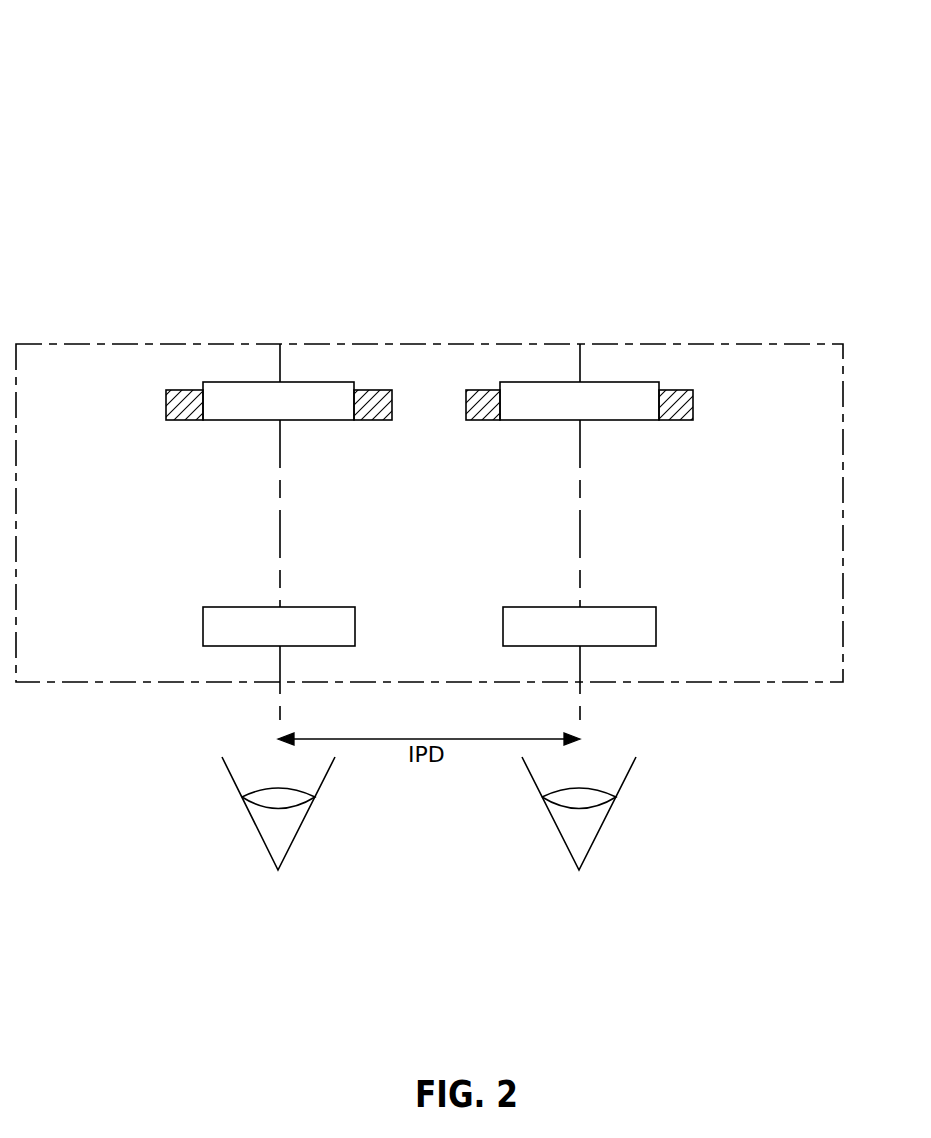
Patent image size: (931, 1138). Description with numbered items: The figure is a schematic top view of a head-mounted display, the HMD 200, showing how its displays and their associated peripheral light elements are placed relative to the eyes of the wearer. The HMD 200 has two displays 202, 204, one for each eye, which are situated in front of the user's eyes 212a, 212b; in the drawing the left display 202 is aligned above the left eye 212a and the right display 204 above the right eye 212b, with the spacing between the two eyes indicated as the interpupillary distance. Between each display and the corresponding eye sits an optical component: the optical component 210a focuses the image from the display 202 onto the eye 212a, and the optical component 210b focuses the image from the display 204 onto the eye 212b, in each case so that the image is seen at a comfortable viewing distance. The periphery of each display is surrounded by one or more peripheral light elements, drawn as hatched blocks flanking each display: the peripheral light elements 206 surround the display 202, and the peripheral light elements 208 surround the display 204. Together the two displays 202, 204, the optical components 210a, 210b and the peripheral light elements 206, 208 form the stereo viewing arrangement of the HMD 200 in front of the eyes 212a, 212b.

The HMD 200 is at (224, 98).
The display 202 is at (278, 401).
The display 204 is at (579, 401).
The peripheral light elements 206 is at (165, 407).
The peripheral light elements 208 is at (694, 405).
The optical component 210a is at (279, 626).
The optical component 210b is at (579, 626).
The user's eye 212a is at (260, 840).
The user's eye 212b is at (616, 831).